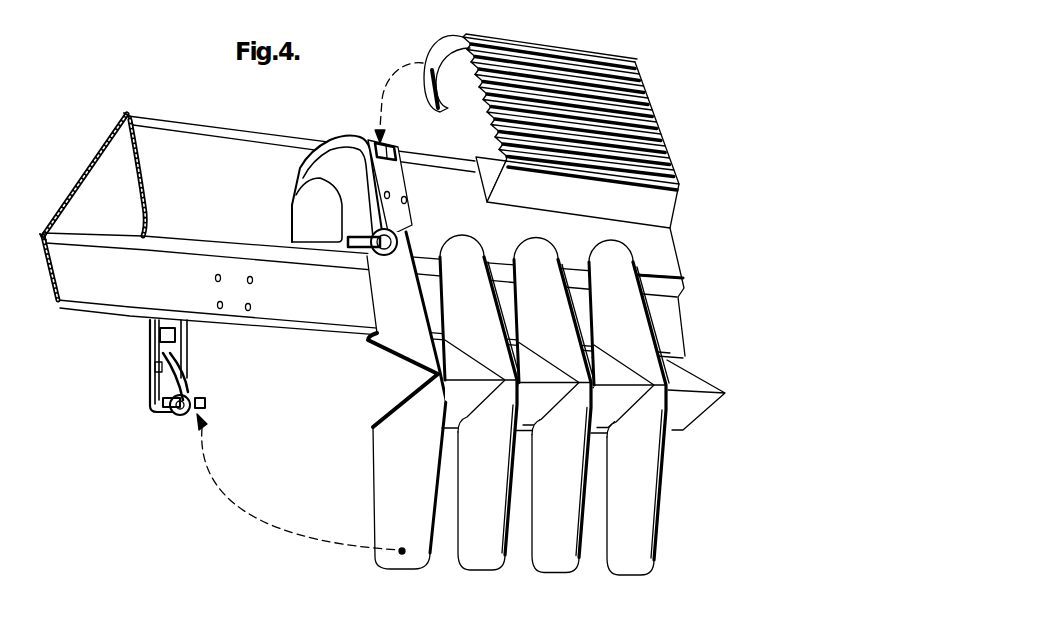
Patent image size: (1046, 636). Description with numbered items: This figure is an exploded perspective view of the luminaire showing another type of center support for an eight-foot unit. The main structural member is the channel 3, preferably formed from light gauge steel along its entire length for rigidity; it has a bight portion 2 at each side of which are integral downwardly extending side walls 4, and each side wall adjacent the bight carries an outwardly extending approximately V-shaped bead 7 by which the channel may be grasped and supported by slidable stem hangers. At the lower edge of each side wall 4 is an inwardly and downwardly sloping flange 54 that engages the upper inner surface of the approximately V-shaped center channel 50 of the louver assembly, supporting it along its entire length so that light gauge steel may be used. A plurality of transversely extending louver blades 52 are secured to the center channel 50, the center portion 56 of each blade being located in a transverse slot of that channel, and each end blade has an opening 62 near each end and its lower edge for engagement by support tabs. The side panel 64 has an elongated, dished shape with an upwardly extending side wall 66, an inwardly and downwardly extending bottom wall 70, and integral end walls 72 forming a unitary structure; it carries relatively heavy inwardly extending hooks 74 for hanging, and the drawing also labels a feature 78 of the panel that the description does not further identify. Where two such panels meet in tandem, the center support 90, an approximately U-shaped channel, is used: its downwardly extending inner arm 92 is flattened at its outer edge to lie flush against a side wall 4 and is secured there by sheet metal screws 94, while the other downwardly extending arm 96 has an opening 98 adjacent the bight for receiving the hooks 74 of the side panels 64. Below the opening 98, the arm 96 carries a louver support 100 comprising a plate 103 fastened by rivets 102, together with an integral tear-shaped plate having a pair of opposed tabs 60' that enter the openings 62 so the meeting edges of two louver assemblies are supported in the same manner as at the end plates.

The bight portion 2 is at (86, 173).
The channel 3 is at (94, 213).
The side wall 4 is at (141, 190).
The V-shaped bead 7 is at (135, 114).
The center channel 50 is at (379, 424).
The louver blade 52 is at (481, 562).
The flange 54 is at (160, 251).
The center portion 56 is at (403, 363).
The tab 60' is at (263, 342).
The opening 62 is at (402, 556).
The side panel 64 is at (667, 215).
The side wall 66 is at (679, 181).
The bottom wall 70 is at (672, 206).
The end wall 72 is at (495, 62).
The hook 74 is at (432, 104).
The cooling fins 78 is at (653, 107).
The center support 90 is at (361, 123).
The inner arm 92 is at (291, 218).
The sheet metal screw 94 is at (216, 278).
The arm 96 is at (412, 205).
The opening 98 is at (393, 146).
The louver support 100 is at (384, 257).
The rivet 102 is at (407, 198).
The plate 103 is at (162, 354).